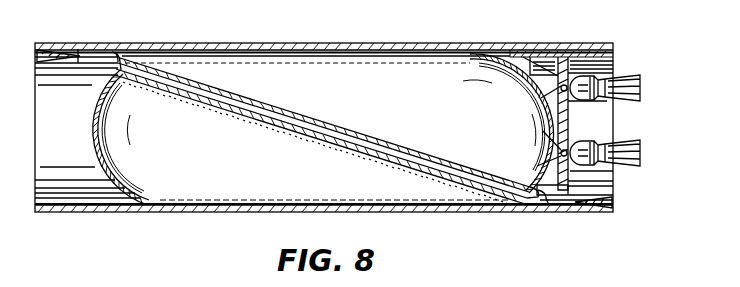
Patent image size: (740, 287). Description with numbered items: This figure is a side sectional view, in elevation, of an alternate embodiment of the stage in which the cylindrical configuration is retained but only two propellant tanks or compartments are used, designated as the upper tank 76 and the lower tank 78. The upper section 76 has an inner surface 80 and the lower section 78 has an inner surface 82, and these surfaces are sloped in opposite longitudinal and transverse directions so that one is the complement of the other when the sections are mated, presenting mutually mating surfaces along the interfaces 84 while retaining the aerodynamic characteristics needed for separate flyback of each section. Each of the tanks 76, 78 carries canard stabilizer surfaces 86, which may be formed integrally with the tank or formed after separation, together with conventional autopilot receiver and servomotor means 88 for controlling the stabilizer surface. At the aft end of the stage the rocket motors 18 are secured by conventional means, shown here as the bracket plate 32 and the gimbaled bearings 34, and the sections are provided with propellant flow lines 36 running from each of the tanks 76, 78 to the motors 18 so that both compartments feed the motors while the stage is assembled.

The rocket motors 18 is at (638, 88).
The bracket plate 32 is at (571, 54).
The gimbaled bearings 34 is at (553, 97).
The propellant flow lines 36 is at (518, 80).
The upper propellant tank 76 is at (405, 113).
The lower propellant tank 78 is at (241, 166).
The inner surface 80 is at (387, 148).
The inner surface 82 is at (437, 160).
The interfaces 84 is at (463, 169).
The canard stabilizer surfaces 86 is at (72, 47).
The autopilot receiver and servomotor means 88 is at (109, 47).